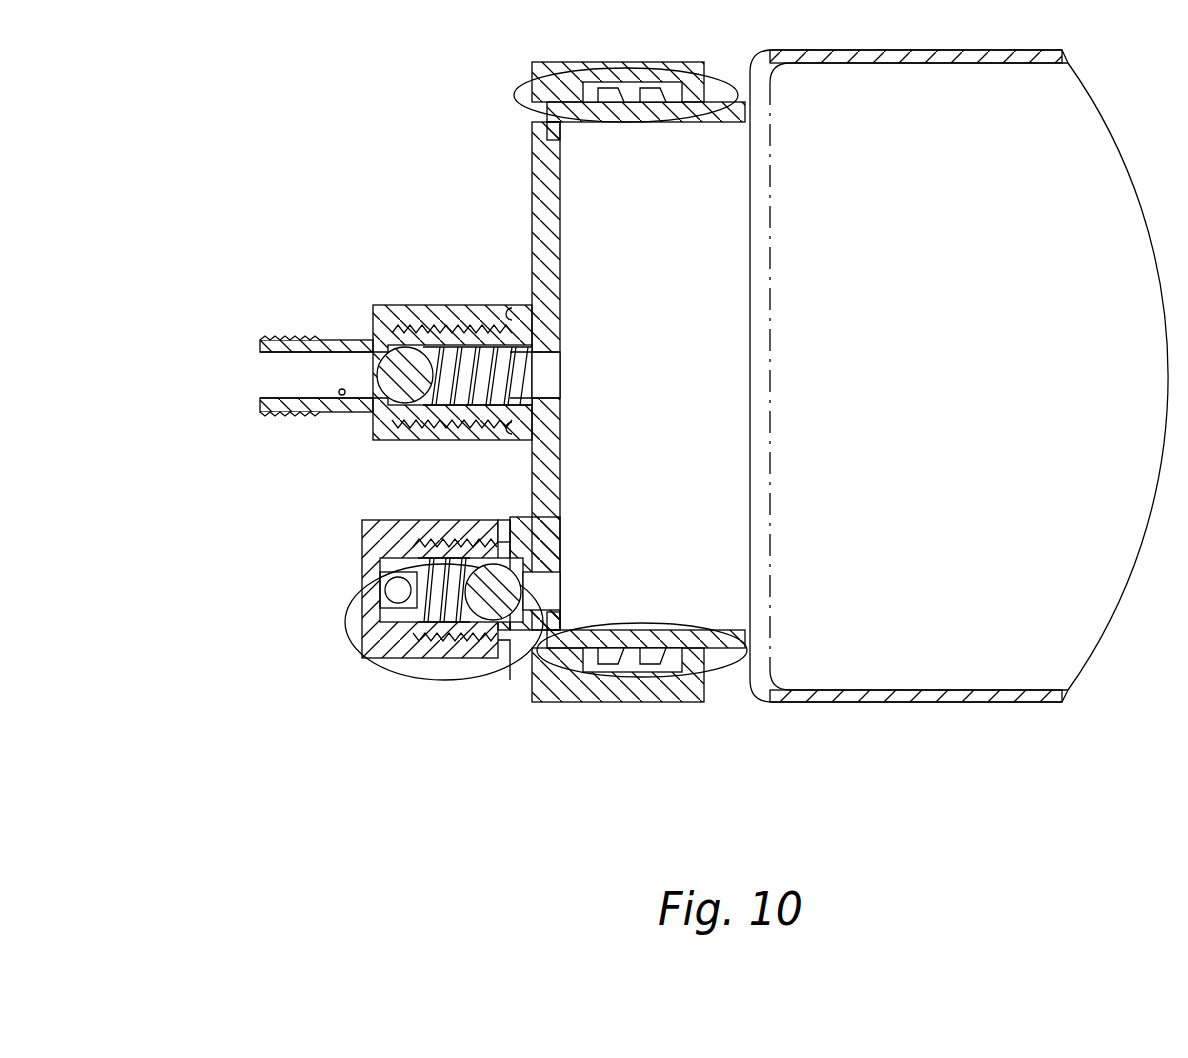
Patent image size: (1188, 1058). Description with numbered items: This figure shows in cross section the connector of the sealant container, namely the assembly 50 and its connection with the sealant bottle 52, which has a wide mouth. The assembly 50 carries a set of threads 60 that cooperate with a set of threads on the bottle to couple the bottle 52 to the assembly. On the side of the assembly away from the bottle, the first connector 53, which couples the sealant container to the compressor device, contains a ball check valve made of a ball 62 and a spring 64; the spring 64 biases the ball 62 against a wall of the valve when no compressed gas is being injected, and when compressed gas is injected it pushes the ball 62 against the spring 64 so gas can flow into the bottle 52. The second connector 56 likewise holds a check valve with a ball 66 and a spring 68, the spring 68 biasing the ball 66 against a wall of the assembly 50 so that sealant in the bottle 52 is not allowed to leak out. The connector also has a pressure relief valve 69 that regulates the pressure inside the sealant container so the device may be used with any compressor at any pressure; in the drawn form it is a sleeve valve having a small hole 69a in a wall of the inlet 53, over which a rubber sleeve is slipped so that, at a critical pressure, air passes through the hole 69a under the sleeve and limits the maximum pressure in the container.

The assembly 50 is at (567, 690).
The sealant bottle 52 is at (918, 361).
The first connector 53 is at (394, 350).
The second connector 56 is at (377, 635).
The set of threads 60 is at (520, 97).
The ball 62 is at (410, 360).
The spring 64 is at (490, 332).
The ball 66 is at (503, 602).
The spring 68 is at (437, 605).
The pressure relief valve 69 is at (308, 430).
The small hole 69a is at (342, 397).